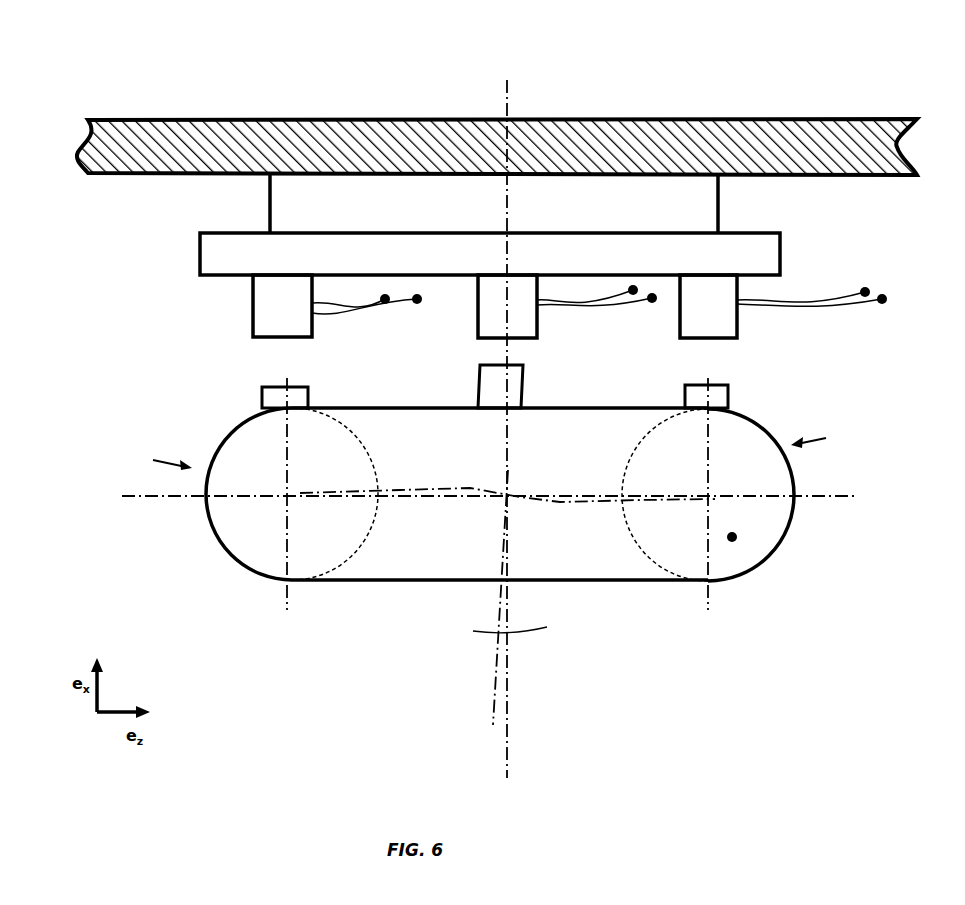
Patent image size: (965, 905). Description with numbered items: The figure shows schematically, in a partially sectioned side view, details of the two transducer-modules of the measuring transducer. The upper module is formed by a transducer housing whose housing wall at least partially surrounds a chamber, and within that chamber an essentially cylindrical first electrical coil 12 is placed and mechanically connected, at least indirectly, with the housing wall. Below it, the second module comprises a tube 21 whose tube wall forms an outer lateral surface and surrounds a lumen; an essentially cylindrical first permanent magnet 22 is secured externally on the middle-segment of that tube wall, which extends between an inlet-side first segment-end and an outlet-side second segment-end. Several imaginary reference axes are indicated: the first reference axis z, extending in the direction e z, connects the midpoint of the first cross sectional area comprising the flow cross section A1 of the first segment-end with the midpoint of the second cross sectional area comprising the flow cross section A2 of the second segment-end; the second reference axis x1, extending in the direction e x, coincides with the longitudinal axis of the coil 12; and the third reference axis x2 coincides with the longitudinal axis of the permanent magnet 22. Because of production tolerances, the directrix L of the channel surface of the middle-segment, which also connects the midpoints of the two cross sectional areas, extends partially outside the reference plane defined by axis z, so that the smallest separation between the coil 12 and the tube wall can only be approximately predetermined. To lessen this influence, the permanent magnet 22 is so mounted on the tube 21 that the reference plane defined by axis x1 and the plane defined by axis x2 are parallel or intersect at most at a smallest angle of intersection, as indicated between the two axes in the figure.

The first electrical coil 12 is at (497, 320).
The tube 21 is at (372, 565).
The first permanent magnet 22 is at (515, 385).
The flow cross section of the first segment-end A1 is at (154, 462).
The flow cross section of the second segment-end A2 is at (824, 440).
The directrix L is at (563, 500).
The second reference axis x1 is at (510, 429).
The third reference axis x2 is at (494, 609).
The first reference axis z is at (489, 497).